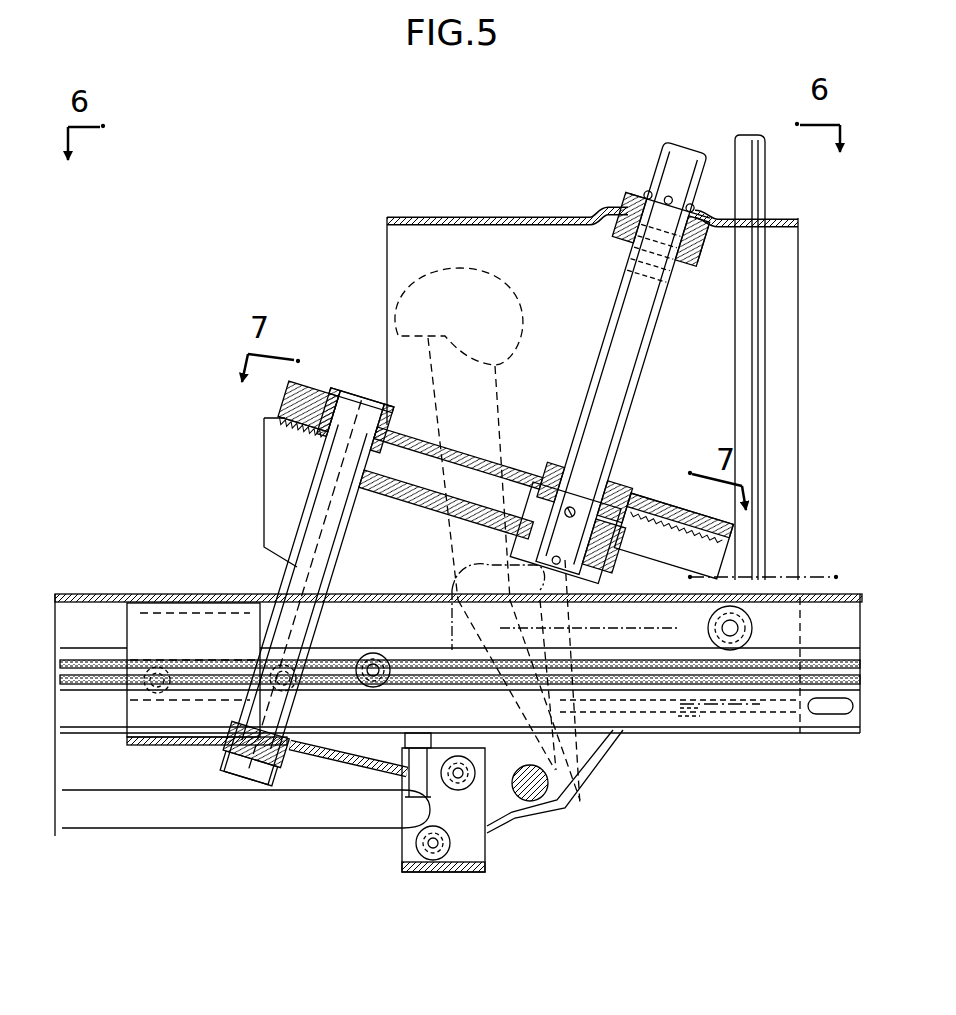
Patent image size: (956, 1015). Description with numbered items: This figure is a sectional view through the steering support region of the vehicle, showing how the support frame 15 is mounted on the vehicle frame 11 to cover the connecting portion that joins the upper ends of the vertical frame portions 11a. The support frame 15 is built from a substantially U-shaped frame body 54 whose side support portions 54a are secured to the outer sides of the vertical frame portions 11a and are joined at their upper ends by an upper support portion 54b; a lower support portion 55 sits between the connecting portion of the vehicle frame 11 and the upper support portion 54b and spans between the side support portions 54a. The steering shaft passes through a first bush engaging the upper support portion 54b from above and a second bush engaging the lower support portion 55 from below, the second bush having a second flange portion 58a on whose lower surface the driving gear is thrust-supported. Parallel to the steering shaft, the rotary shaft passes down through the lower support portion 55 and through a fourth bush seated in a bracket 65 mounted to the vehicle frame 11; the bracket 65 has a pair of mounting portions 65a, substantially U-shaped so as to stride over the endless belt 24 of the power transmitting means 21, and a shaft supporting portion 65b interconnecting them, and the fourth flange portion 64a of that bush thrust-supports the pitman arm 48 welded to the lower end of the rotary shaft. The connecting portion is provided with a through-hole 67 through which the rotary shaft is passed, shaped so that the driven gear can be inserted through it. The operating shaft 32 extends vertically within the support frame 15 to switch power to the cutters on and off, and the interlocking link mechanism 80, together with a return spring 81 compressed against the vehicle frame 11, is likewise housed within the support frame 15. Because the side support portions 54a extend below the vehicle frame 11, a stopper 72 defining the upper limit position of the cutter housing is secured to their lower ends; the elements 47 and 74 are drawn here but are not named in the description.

The vehicle frame 11 is at (790, 592).
The vertical frame portion 11a is at (782, 700).
The support frame 15 is at (268, 200).
The power transmitting means 21 is at (735, 700).
The endless belt 24 is at (838, 594).
The operating shaft 32 is at (752, 332).
The pipe 47 is at (228, 812).
The pitman arm 48 is at (410, 800).
The frame body 54 is at (396, 214).
The side support portion 54a is at (780, 396).
The upper support portion 54b is at (498, 218).
The lower support portion 55 is at (386, 340).
The second flange portion 58a is at (505, 500).
The fourth flange portion 64a is at (310, 775).
The bracket 65 is at (181, 715).
The mounting portion 65a is at (176, 600).
The shaft supporting portion 65b is at (172, 748).
The through-hole 67 is at (434, 602).
The stopper 72 is at (454, 872).
The pin 74 is at (534, 803).
The interlocking link mechanism 80 is at (460, 693).
The return spring 81 is at (700, 720).